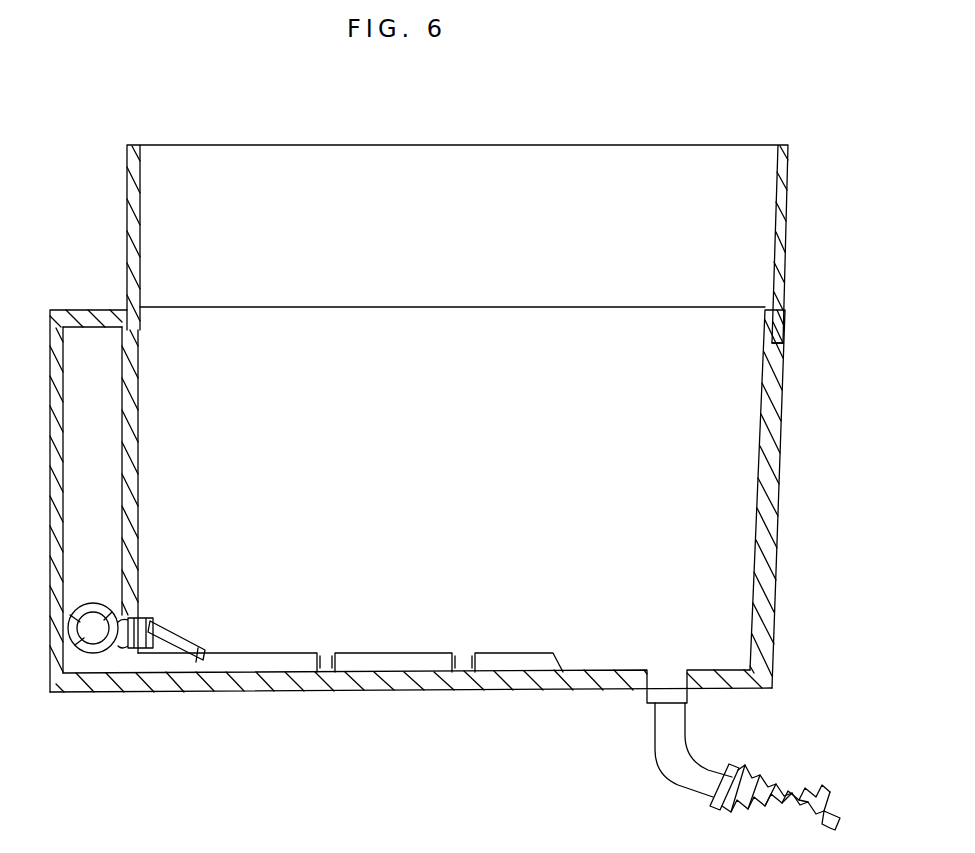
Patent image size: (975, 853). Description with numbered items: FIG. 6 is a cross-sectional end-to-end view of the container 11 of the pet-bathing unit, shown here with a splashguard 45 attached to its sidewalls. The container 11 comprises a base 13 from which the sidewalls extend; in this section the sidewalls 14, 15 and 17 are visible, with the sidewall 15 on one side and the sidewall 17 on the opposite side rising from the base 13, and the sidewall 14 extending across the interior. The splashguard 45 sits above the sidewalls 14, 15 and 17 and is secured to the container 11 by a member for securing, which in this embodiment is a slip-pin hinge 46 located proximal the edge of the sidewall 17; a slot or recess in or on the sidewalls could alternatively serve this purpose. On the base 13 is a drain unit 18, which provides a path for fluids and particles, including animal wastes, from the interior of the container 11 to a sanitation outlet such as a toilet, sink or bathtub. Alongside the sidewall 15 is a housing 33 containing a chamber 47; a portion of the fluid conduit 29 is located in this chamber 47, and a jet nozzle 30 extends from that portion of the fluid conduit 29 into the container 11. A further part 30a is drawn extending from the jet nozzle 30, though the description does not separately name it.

The container 11 is at (462, 526).
The base 13 is at (462, 660).
The sidewall 14 is at (432, 307).
The sidewall 15 is at (137, 427).
The sidewall 17 is at (767, 508).
The drain unit 18 is at (775, 733).
The fluid conduit 29 is at (95, 653).
The jet nozzle 30 is at (158, 608).
The tube 30a is at (180, 643).
The housing 33 is at (85, 312).
The splashguard 45 is at (465, 145).
The slip-pin hinge 46 is at (785, 313).
The chamber 47 is at (108, 476).